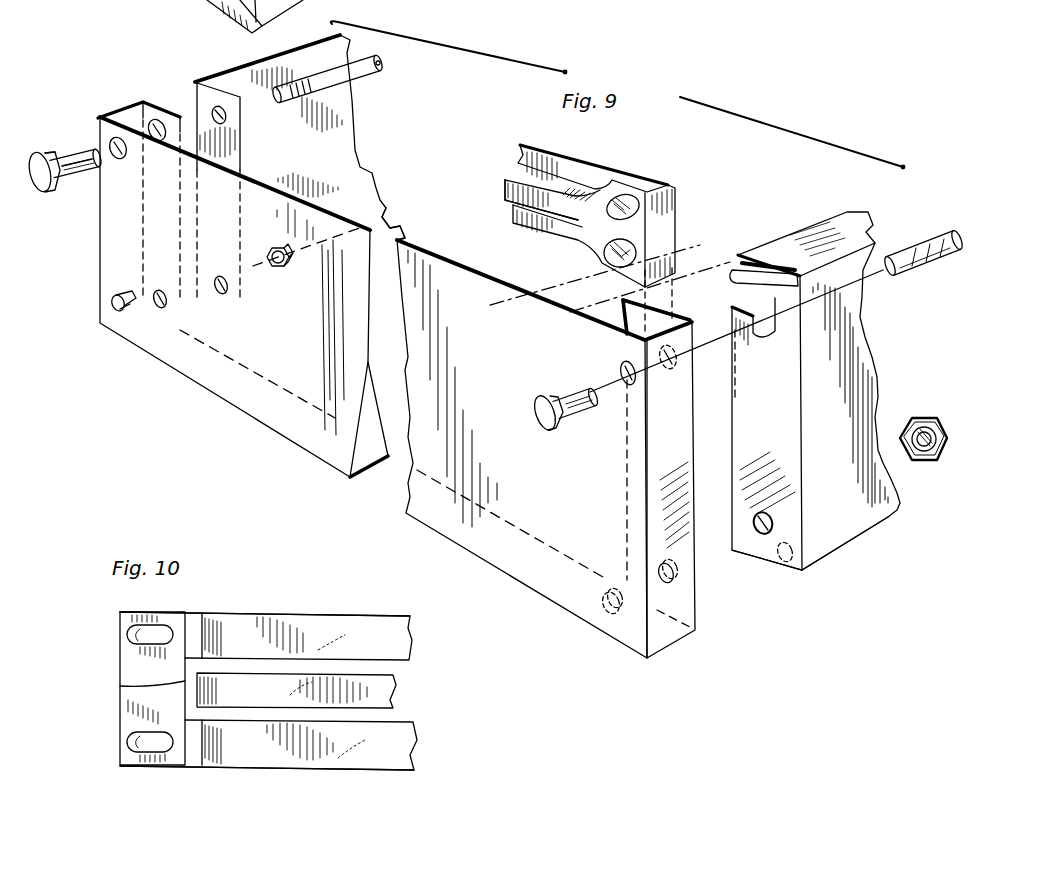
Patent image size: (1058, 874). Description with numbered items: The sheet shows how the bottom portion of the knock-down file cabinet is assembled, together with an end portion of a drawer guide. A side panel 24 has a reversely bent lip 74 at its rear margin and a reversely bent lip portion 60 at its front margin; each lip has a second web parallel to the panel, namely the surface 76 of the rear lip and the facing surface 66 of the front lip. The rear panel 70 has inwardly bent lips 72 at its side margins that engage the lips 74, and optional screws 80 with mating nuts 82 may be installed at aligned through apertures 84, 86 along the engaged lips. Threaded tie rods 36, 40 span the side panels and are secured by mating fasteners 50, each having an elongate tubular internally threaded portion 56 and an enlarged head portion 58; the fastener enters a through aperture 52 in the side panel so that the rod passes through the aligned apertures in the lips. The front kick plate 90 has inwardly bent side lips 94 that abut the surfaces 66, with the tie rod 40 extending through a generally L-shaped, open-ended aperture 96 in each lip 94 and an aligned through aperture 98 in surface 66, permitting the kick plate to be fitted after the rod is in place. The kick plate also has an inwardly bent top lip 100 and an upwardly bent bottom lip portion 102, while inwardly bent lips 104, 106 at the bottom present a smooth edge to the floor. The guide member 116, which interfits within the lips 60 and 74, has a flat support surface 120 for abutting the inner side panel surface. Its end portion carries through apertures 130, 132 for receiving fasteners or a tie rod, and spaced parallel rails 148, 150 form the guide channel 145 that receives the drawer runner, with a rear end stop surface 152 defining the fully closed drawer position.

In FIG. 9, the side panel 24 is at (590, 529).
In FIG. 9, the tie rod 36 is at (366, 68).
In FIG. 9, the tie rod 40 is at (134, 116).
In FIG. 9, the mating fastener 50 is at (72, 182).
In FIG. 9, the through aperture 52 is at (120, 166).
In FIG. 9, the tubular internally threaded portion 56 is at (85, 148).
In FIG. 9, the enlarged head portion 58 is at (40, 156).
In FIG. 9, the reversely bent lip portion 60 is at (662, 640).
In FIG. 9, the facing surface 66 is at (678, 318).
In FIG. 9, the rear panel 70 is at (300, 152).
In FIG. 9, the inwardly bent lip 72 is at (200, 80).
In FIG. 9, the reversely bent lip 74 is at (107, 104).
In FIG. 9, the surface of lip 76 is at (152, 98).
In FIG. 9, the screw 80 is at (219, 106).
In FIG. 9, the nut 82 is at (285, 268).
In FIG. 9, the through aperture 84 is at (152, 318).
In FIG. 9, the through aperture 86 is at (219, 295).
In FIG. 9, the front kick plate 90 is at (843, 523).
In FIG. 9, the inwardly bent side margin or lip 94 is at (763, 563).
In FIG. 9, the aperture 96 is at (770, 335).
In FIG. 9, the through aperture 98 is at (668, 372).
In FIG. 9, the inwardly bent top margin or lip 100 is at (813, 233).
In FIG. 9, the upwardly bent lip portion 102 is at (790, 560).
In FIG. 9, the inwardly bent lip or margin 104 is at (364, 456).
In FIG. 9, the inwardly bent lip or margin 106 is at (397, 236).
In FIG. 9, the guide member 116 is at (614, 182).
In FIG. 10, the guide member 116 is at (383, 773).
In FIG. 9, the flat support surface 120 is at (502, 187).
In FIG. 10, the through aperture 130 is at (127, 633).
In FIG. 10, the through aperture 132 is at (125, 743).
In FIG. 10, the guide track or channel 145 is at (389, 686).
In FIG. 10, the rail 148 is at (290, 657).
In FIG. 10, the rail 150 is at (257, 727).
In FIG. 10, the rear end stop surface 152 is at (118, 687).